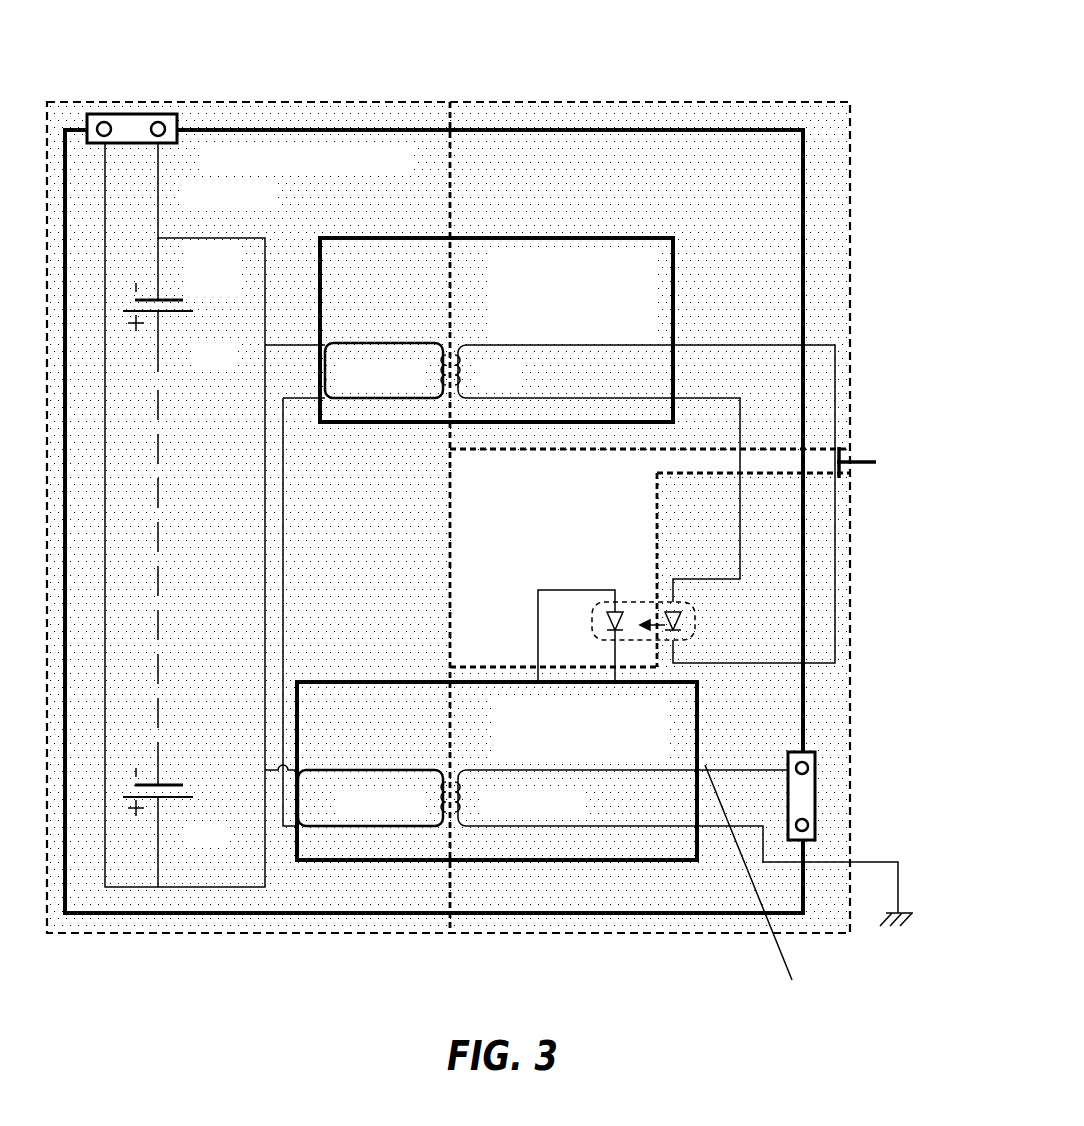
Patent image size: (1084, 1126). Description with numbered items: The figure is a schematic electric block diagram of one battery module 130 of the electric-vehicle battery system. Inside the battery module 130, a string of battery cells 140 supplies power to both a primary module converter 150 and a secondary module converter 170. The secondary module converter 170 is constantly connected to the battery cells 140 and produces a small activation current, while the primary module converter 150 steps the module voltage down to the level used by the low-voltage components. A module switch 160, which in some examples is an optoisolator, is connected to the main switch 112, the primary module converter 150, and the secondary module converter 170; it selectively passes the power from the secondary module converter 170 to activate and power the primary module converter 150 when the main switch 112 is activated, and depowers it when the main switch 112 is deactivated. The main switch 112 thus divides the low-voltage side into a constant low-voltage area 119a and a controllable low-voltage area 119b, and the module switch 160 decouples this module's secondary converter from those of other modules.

The constant low-voltage area 119a is at (665, 101).
The controllable low-voltage area 119b is at (848, 645).
The battery module 130 is at (407, 169).
The battery cells 140 is at (158, 312).
The secondary module converter 170 is at (635, 333).
The primary module converter 150 is at (653, 757).
The module switch 160 is at (640, 600).
The main switch 112 is at (857, 461).